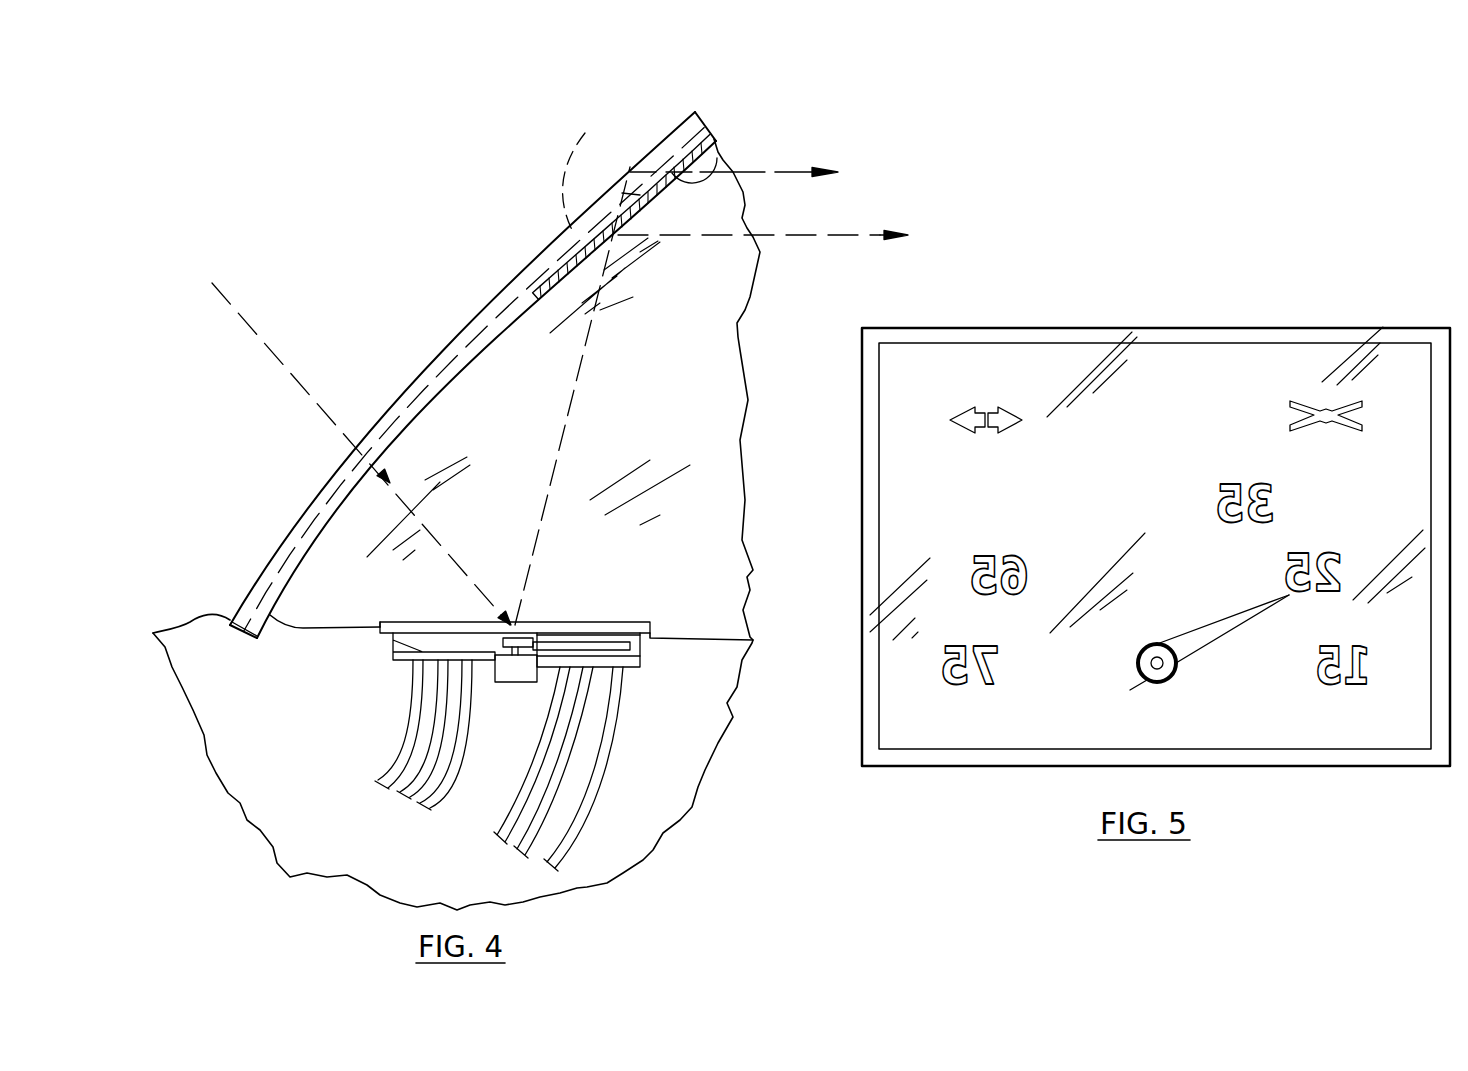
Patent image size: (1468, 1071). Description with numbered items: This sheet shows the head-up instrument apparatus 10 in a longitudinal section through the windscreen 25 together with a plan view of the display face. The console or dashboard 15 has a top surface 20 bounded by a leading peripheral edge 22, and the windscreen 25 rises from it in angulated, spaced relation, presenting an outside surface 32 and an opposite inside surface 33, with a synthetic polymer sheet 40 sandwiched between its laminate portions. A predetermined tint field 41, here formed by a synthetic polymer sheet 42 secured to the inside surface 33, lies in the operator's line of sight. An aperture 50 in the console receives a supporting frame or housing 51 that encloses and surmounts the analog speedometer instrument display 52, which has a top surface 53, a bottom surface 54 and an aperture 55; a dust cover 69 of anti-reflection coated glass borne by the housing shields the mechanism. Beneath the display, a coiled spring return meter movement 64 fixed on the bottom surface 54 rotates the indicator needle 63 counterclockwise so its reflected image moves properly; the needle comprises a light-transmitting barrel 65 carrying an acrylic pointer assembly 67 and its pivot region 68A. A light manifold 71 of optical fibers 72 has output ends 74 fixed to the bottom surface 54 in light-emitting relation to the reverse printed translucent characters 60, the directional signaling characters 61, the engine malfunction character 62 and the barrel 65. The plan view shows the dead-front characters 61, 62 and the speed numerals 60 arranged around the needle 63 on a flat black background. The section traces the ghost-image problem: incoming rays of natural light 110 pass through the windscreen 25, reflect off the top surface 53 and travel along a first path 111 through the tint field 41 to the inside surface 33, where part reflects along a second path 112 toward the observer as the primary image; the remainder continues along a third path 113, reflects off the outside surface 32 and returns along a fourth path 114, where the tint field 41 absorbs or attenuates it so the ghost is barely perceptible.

In FIG. 4, the apparatus 10 is at (330, 673).
In FIG. 4, the console or dashboard 15 is at (670, 737).
In FIG. 4, the top surface 20 is at (690, 636).
In FIG. 4, the leading peripheral edge 22 is at (272, 611).
In FIG. 4, the windscreen 25 is at (470, 286).
In FIG. 4, the outside surface 32 is at (432, 368).
In FIG. 4, the inside surface 33 is at (467, 367).
In FIG. 4, the synthetic polymer sheet 40 is at (601, 179).
In FIG. 4, the predetermined tint field 41 is at (728, 152).
In FIG. 4, the synthetic polymer sheet 42 is at (718, 158).
In FIG. 4, the aperture of predetermined dimensions 50 is at (648, 633).
In FIG. 4, the supporting frame or housing 51 is at (652, 655).
In FIG. 4, the analog speedometer instrument display 52 is at (440, 612).
In FIG. 5, the analog speedometer instrument display 52 is at (1172, 366).
In FIG. 4, the top surface 53 is at (393, 642).
In FIG. 4, the bottom surface 54 is at (478, 664).
In FIG. 4, the aperture of predetermined dimensions 55 is at (541, 681).
In FIG. 5, the reverse printed translucent characters 60 is at (1125, 455).
In FIG. 5, the directional signaling characters 61 is at (963, 410).
In FIG. 5, the engine malfunction character 62 is at (1330, 418).
In FIG. 4, the indicator needle 63 is at (553, 641).
In FIG. 5, the indicator needle 63 is at (1205, 645).
In FIG. 4, the coiled spring return meter movement 64 is at (486, 667).
In FIG. 5, the barrel 65 is at (1138, 656).
In FIG. 5, the acrylic pointer assembly 67 is at (1232, 614).
In FIG. 5, the pointer pivot 68A is at (1148, 680).
In FIG. 4, the dust cover 69 is at (580, 632).
In FIG. 4, the light manifold 71 is at (612, 773).
In FIG. 4, the optical fiber 72 is at (580, 825).
In FIG. 4, the output end 74 is at (590, 703).
In FIG. 4, the incoming rays of natural light 110 is at (297, 382).
In FIG. 4, the first path 111 is at (597, 316).
In FIG. 4, the second path 112 is at (698, 233).
In FIG. 4, the third path 113 is at (652, 202).
In FIG. 4, the fourth path 114 is at (755, 171).